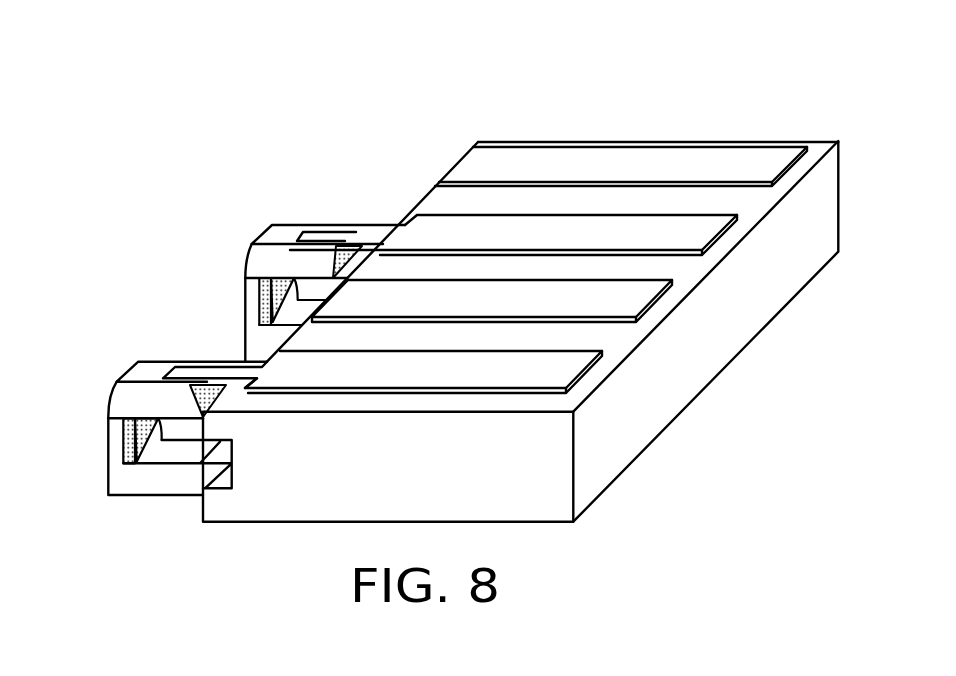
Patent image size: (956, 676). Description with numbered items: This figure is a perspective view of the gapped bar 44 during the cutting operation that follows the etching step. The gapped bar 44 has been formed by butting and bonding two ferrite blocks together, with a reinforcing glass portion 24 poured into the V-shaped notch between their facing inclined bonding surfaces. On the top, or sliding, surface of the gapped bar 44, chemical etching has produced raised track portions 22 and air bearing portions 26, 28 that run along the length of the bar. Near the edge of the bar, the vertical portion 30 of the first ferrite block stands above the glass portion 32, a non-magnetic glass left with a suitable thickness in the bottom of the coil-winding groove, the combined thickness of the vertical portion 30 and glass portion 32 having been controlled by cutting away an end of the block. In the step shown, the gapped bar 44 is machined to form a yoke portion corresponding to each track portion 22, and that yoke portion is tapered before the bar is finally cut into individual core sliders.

The gapped bar 44 is at (648, 108).
The air bearing portion 28 is at (751, 158).
The air bearing portion 26 is at (707, 231).
The vertical portion 30 is at (252, 288).
The glass portion 32 is at (264, 301).
The track portion 22 is at (330, 234).
The reinforcing glass portion 24 is at (346, 262).